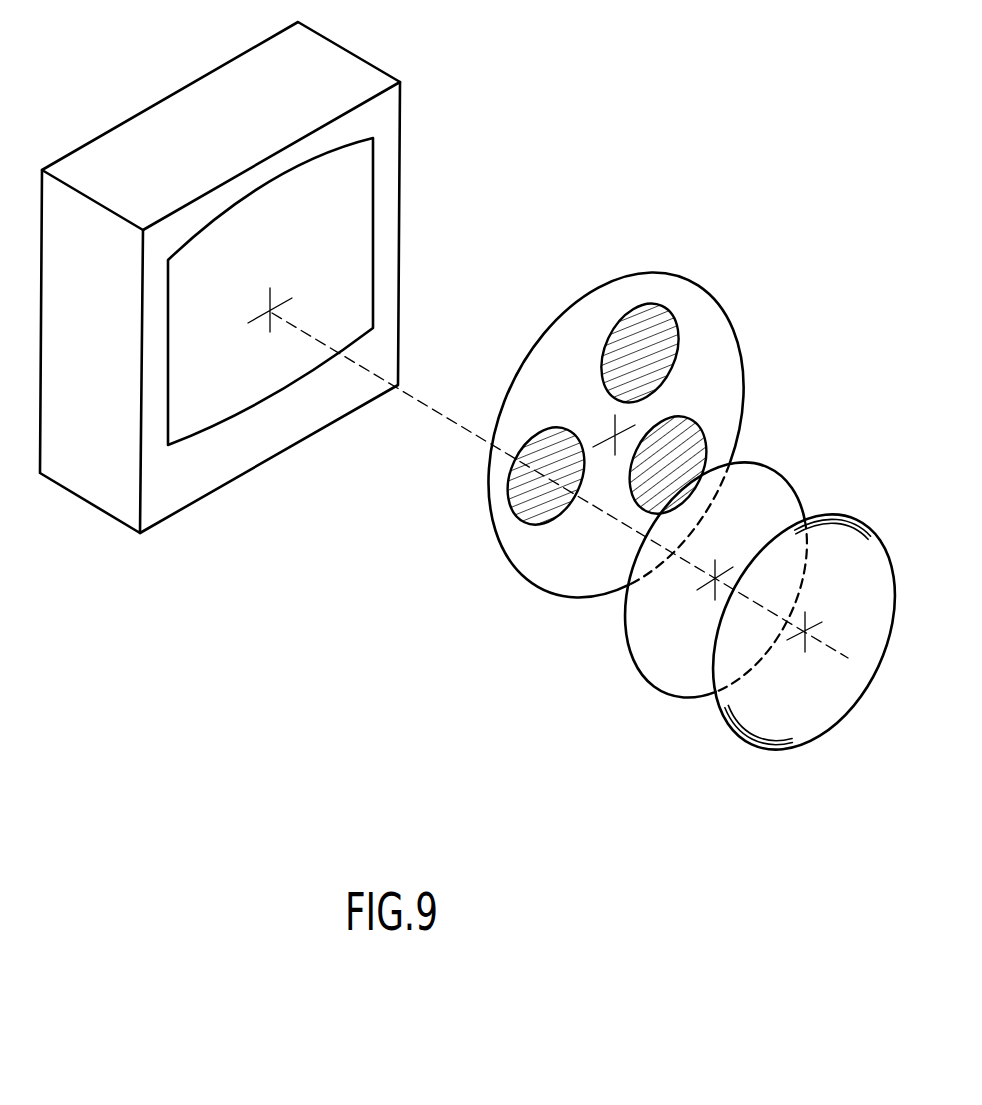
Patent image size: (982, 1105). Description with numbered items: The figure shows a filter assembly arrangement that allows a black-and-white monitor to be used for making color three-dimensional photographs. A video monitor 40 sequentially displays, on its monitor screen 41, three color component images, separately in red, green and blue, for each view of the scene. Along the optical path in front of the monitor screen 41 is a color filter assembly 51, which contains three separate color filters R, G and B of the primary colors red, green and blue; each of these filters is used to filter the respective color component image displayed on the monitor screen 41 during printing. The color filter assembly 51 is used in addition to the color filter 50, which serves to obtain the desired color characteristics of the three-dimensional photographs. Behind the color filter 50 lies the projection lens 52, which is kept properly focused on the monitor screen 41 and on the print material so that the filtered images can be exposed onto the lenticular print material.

The video monitor 40 is at (342, 73).
The monitor screen 41 is at (358, 207).
The color filter assembly 51 is at (717, 317).
The green color filter G is at (652, 302).
The blue color filter B is at (710, 417).
The red color filter R is at (515, 502).
The color filter 50 is at (635, 637).
The projection lens 52 is at (727, 733).